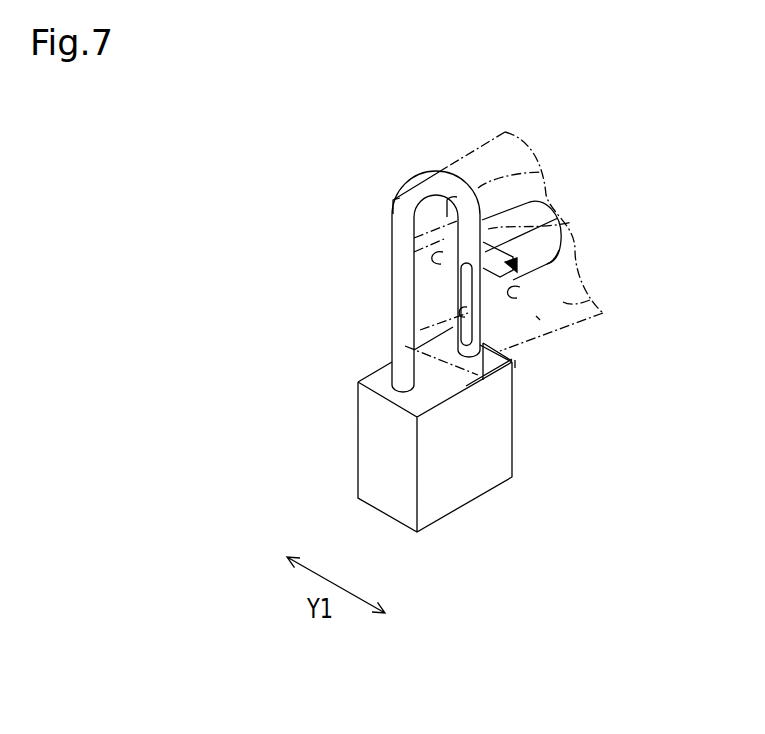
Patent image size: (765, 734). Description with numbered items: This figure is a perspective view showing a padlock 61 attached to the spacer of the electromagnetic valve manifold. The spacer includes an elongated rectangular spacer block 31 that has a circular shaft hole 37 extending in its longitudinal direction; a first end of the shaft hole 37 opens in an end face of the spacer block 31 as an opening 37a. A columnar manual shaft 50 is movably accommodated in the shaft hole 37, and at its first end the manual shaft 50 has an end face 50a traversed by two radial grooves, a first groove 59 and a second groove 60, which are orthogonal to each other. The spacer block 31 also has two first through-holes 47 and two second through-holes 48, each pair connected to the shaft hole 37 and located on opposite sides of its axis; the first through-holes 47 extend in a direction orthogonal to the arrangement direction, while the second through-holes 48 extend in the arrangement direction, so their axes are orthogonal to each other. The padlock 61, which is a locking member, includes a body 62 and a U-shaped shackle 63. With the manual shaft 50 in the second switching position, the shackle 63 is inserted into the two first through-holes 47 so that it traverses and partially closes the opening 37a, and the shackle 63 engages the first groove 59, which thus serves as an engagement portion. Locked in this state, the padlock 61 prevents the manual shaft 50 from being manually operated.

The spacer block 31 is at (590, 304).
The shaft hole 37 is at (513, 346).
The opening 37a is at (440, 300).
The first through-holes 47 is at (540, 172).
The second through-holes 48 is at (540, 320).
The manual shaft 50 is at (563, 219).
The end face 50a is at (455, 282).
The first groove 59 is at (556, 247).
The second groove 60 is at (522, 284).
The padlock 61 is at (315, 332).
The body 62 is at (361, 472).
The shackle 63 is at (456, 197).